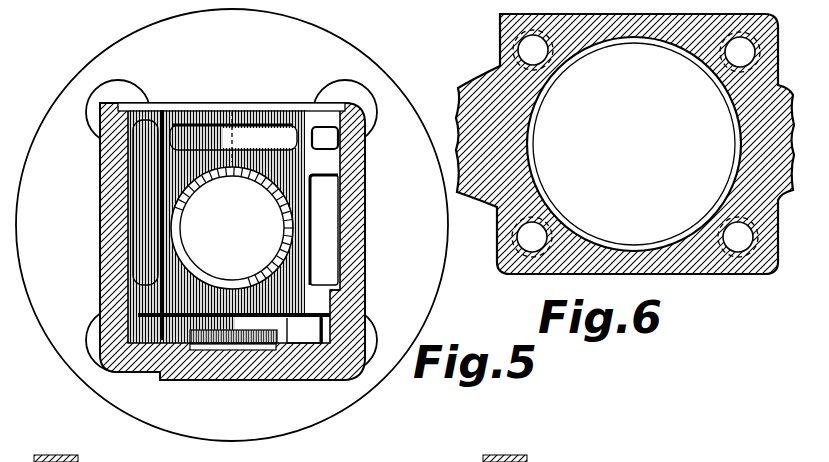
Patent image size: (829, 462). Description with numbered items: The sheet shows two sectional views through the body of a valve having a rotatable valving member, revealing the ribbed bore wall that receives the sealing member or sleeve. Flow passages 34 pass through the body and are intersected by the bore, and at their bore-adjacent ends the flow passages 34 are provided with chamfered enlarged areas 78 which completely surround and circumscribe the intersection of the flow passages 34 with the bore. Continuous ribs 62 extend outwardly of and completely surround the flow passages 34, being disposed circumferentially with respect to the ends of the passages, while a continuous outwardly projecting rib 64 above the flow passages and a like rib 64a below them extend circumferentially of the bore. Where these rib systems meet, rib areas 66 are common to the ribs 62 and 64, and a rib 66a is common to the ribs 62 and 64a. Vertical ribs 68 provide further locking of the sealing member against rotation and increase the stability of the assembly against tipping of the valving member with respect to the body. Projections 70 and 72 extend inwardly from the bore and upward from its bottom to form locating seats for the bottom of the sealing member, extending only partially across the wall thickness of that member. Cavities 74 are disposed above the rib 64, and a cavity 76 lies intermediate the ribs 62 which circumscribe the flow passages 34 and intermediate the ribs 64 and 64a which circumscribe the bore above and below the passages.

In FIG. 5, the flow passages 34 is at (222, 193).
In FIG. 5, the continuous ribs 62 is at (298, 230).
In FIG. 5, the continuous outwardly projecting rib 64 is at (325, 160).
In FIG. 5, the continuous outwardly projecting rib 64a is at (323, 300).
In FIG. 5, the rib areas 66 is at (306, 129).
In FIG. 5, the rib 66a is at (288, 303).
In FIG. 5, the vertical ribs 68 is at (303, 160).
In FIG. 6, the vertical ribs 68 is at (574, 62).
In FIG. 5, the projection 70 is at (320, 337).
In FIG. 5, the projection 72 is at (248, 326).
In FIG. 5, the cavities 74 is at (153, 118).
In FIG. 6, the cavities 74 is at (634, 40).
In FIG. 5, the cavity 76 is at (135, 235).
In FIG. 5, the enlarged areas 78 is at (268, 270).